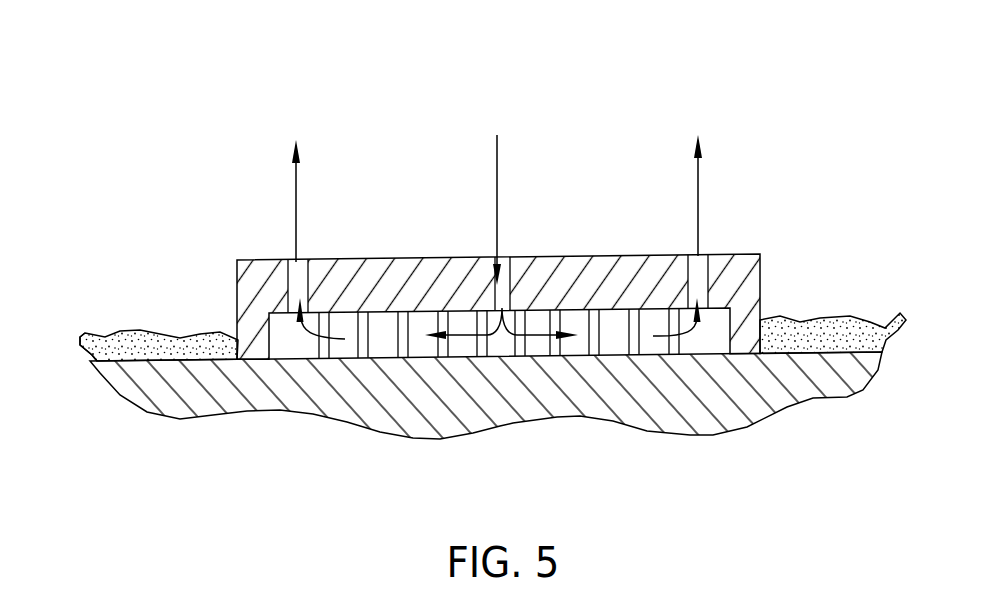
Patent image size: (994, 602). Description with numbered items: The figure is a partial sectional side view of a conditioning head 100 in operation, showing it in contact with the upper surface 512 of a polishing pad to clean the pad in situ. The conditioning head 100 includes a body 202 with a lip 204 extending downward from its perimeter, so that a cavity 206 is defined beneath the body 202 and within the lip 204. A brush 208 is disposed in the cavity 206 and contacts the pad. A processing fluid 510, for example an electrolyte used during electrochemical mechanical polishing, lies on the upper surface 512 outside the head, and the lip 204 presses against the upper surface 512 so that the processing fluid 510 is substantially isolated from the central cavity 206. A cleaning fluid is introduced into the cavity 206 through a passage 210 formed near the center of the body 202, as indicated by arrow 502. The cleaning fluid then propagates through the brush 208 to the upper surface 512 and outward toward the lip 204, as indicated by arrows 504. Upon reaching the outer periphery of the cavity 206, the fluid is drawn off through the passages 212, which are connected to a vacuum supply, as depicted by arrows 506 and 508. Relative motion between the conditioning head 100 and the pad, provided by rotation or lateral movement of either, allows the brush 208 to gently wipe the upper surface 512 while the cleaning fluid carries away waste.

The conditioning head 100 is at (461, 275).
The body 202 is at (400, 260).
The lip 204 is at (255, 337).
The cavity 206 is at (289, 362).
The brush 208 is at (705, 344).
The passage 210 is at (527, 272).
The passages 212 is at (263, 263).
The arrow 502 is at (495, 155).
The arrows 504 is at (462, 338).
The arrows 506 is at (337, 342).
The arrows 508 is at (297, 187).
The processing fluid 510 is at (153, 343).
The upper surface 512 is at (85, 335).